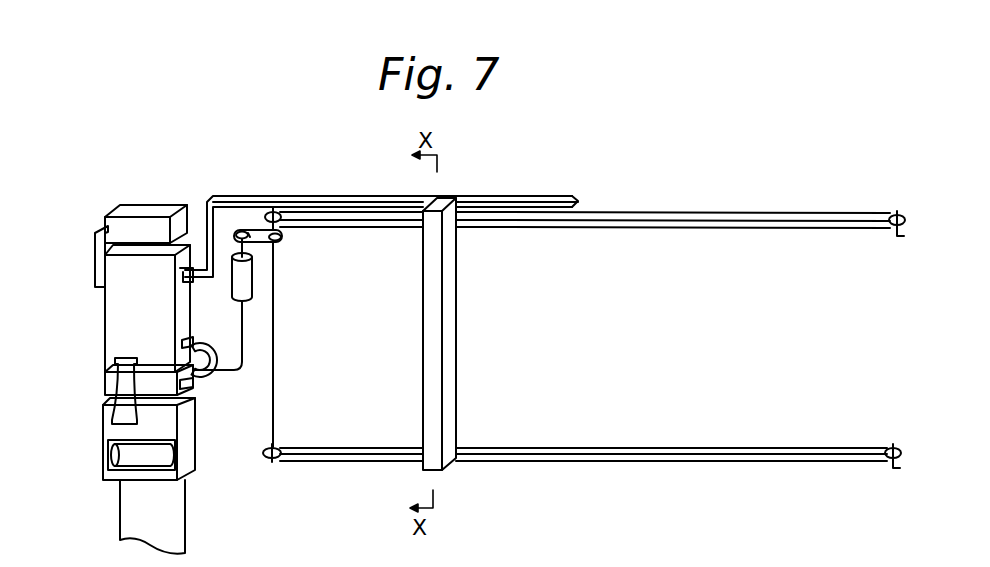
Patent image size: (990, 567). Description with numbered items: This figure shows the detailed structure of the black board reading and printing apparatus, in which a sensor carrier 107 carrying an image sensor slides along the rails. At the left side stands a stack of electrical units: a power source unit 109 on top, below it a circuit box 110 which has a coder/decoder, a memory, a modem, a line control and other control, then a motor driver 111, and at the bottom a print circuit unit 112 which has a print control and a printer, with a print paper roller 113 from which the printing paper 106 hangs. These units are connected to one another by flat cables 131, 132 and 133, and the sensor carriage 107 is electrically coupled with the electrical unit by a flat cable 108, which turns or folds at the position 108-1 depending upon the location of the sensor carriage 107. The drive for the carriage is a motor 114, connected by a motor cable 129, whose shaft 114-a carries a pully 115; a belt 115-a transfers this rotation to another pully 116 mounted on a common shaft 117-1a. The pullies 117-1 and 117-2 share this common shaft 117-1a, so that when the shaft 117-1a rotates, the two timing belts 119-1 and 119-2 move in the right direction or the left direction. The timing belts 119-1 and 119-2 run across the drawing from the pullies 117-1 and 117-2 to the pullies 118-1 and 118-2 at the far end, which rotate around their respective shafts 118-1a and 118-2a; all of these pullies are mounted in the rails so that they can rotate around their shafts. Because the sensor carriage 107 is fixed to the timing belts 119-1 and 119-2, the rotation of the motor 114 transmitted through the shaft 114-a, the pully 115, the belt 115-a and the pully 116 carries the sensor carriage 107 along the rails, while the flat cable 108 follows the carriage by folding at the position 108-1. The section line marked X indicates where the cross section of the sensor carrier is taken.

The printing paper 106 is at (180, 528).
The sensor carrier 107 is at (440, 360).
The flat cable 108 is at (407, 197).
The turning position of flat cable 108-1 is at (572, 197).
The power source unit 109 is at (105, 223).
The circuit box 110 is at (110, 312).
The motor driver 111 is at (108, 388).
The print circuit unit 112 is at (108, 430).
The print paper roller 113 is at (118, 457).
The motor 114 is at (252, 282).
The shaft of the motor 114-a is at (250, 247).
The pully 115 is at (240, 232).
The belt 115-a is at (252, 230).
The pully 116 is at (283, 236).
The pully 117-1 is at (285, 210).
The common shaft 117-1a is at (273, 370).
The pully 117-2 is at (268, 458).
The pully 118-1 is at (903, 216).
The shaft of the pully 118-1a is at (900, 233).
The pully 118-2 is at (897, 448).
The shaft of the pully 118-2a is at (895, 463).
The timing belt 119-1 is at (745, 228).
The timing belt 119-2 is at (718, 446).
The motor cable 129 is at (242, 325).
The flat cable 131 is at (98, 253).
The flat cable 132 is at (113, 365).
The flat cable 133 is at (200, 380).